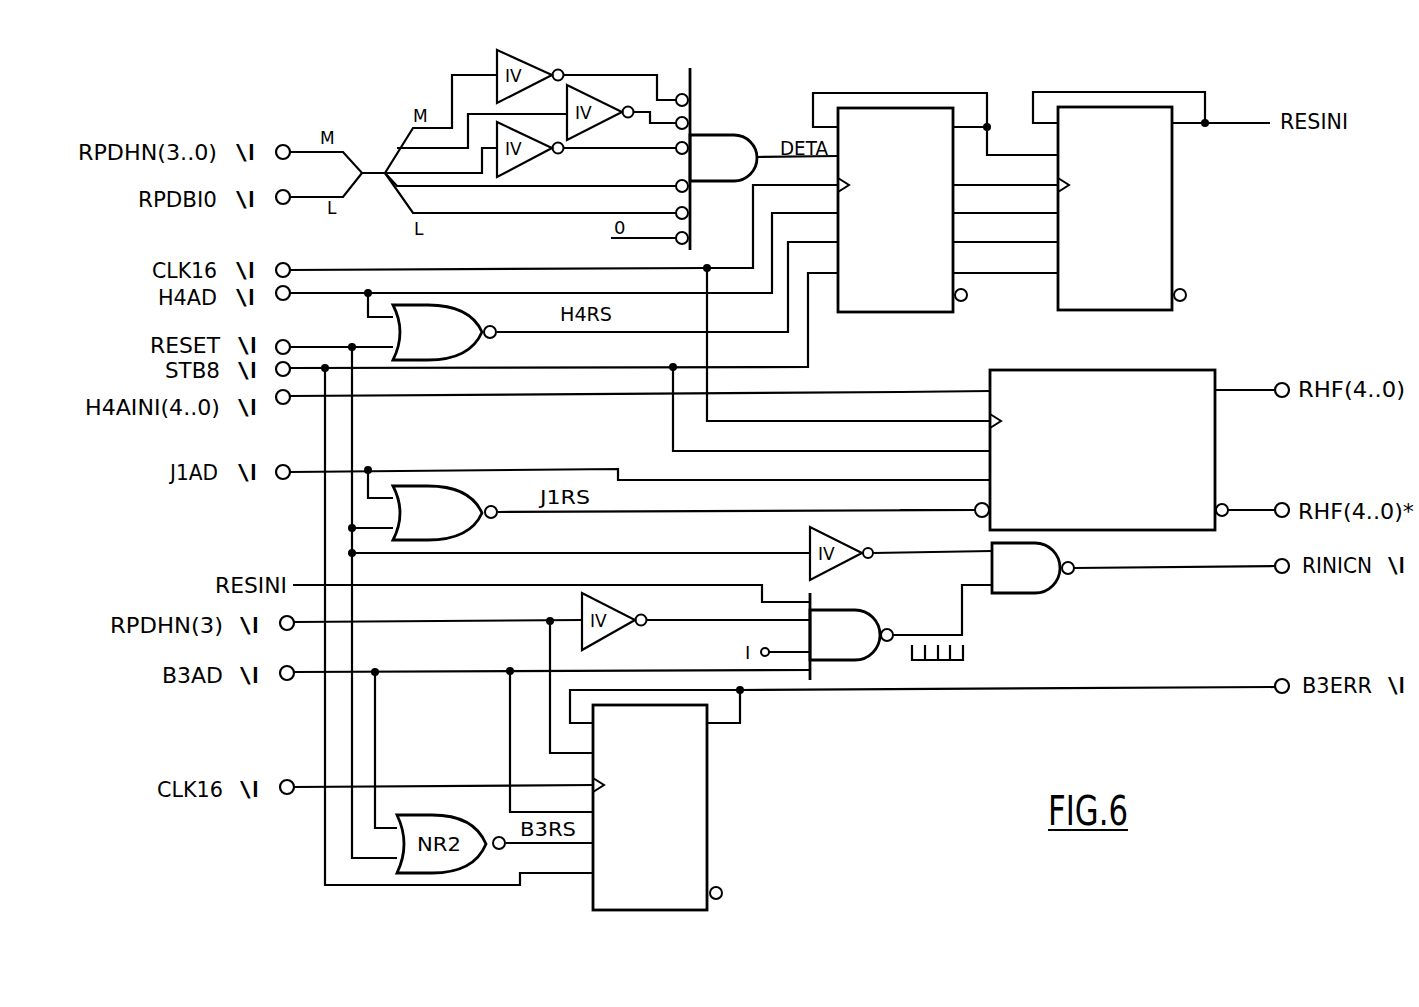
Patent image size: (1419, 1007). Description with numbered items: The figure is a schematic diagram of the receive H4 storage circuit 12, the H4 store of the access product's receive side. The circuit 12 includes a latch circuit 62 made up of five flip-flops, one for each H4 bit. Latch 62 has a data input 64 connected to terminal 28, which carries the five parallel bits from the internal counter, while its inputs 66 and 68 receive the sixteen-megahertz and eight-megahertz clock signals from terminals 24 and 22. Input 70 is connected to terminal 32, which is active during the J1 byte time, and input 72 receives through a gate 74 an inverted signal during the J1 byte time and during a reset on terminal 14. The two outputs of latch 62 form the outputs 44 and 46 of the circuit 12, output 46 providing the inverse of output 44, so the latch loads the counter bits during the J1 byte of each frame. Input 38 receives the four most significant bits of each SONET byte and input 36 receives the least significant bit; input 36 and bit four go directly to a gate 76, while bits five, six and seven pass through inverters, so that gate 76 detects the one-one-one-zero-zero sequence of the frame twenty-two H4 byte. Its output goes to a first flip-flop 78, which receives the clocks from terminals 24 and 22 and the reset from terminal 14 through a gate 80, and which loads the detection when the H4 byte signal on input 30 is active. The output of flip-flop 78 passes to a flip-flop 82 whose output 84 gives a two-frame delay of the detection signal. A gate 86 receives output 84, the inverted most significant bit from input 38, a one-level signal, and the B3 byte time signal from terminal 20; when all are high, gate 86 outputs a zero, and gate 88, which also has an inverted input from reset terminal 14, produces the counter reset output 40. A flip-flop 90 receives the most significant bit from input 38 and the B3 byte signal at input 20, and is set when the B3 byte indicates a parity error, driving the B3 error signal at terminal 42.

The receive H4 storage circuit 12 is at (1266, 81).
The reset terminal 14 is at (288, 340).
The B3 byte time terminal 20 is at (288, 686).
The 8-MHz clock terminal 22 is at (297, 347).
The 16-MHz clock terminal 24 is at (287, 262).
The counter output input 28 is at (293, 404).
The H4 byte time terminal 30 is at (300, 272).
The J1 byte time terminal 32 is at (287, 480).
The least significant bit input 36 is at (293, 204).
The most significant bits input 38 is at (287, 144).
The counter reset output 40 is at (1278, 573).
The B3 error output 42 is at (1282, 673).
The H4 byte output 44 is at (1277, 383).
The inverted H4 byte output 46 is at (1277, 503).
The latch circuit 62 is at (1114, 439).
The latch data input 64 is at (988, 387).
The latch 16-MHz clock input 66 is at (988, 415).
The latch 8-MHz clock input 68 is at (988, 445).
The latch J1 enable input 70 is at (988, 473).
The latch inverted enable input 72 is at (975, 503).
The gate 74 is at (463, 533).
The gate 76 is at (713, 133).
The first flip-flop 78 is at (898, 313).
The gate 80 is at (463, 343).
The flip-flop 82 is at (1128, 311).
The flip-flop output 84 is at (1173, 128).
The gate 86 is at (853, 610).
The gate 88 is at (1023, 593).
The flip-flop 90 is at (708, 800).